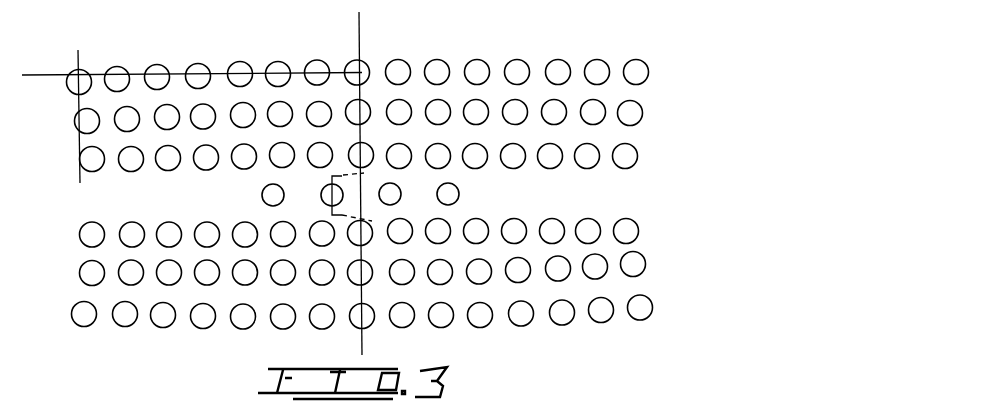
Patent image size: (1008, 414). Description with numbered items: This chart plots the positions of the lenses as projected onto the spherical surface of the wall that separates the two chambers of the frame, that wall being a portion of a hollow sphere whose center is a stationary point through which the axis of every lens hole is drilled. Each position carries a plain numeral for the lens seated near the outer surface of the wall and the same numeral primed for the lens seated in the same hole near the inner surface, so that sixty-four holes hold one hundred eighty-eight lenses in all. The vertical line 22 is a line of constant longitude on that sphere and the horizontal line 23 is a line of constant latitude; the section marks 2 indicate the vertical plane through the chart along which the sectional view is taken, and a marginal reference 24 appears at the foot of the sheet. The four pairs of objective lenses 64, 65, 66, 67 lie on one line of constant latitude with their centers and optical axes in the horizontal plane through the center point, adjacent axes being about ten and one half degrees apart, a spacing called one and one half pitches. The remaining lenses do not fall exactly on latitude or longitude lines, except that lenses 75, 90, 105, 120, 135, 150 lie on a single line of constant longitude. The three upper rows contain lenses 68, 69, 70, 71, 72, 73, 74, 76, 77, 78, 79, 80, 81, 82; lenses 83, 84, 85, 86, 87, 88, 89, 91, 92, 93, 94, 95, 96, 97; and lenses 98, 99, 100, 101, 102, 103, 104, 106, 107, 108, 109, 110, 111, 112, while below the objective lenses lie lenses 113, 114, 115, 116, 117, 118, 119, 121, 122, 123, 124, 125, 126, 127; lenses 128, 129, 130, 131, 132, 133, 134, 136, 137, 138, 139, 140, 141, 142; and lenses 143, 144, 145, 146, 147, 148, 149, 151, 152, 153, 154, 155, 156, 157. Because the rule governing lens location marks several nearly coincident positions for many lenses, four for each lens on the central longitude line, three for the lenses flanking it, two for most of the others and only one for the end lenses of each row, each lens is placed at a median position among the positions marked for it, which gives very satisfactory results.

The section line 2- 2 is at (356, 355).
The line of constant longitude 22 is at (72, 55).
The line of constant latitude 23 is at (30, 76).
The base 24 is at (244, 409).
The objective lens 64 is at (267, 186).
The objective lens 65 is at (338, 187).
The objective lens 66 is at (396, 185).
The objective lens 67 is at (454, 185).
The lens 68 is at (73, 72).
The lens 69 is at (115, 68).
The lens 70 is at (151, 67).
The lens 71 is at (192, 66).
The lens 72 is at (234, 64).
The lens 73 is at (272, 64).
The lens 74 is at (311, 63).
The lens 75 is at (351, 63).
The lens 76 is at (392, 62).
The lens 77 is at (431, 62).
The lens 78 is at (471, 62).
The lens 79 is at (511, 62).
The lens 80 is at (552, 62).
The lens 81 is at (591, 62).
The lens 82 is at (634, 61).
The lens 83 is at (81, 111).
The lens 84 is at (121, 109).
The lens 85 is at (161, 107).
The lens 86 is at (197, 107).
The lens 87 is at (237, 105).
The lens 88 is at (274, 104).
The lens 89 is at (313, 104).
The lens 90 is at (352, 102).
The lens 91 is at (393, 102).
The lens 92 is at (432, 102).
The lens 93 is at (474, 101).
The lens 94 is at (513, 101).
The lens 95 is at (558, 101).
The lens 96 is at (591, 101).
The lens 97 is at (634, 102).
The lens 98 is at (86, 149).
The lens 99 is at (125, 149).
The lens 100 is at (162, 148).
The lens 101 is at (200, 148).
The lens 102 is at (242, 146).
The lens 103 is at (286, 144).
The lens 104 is at (318, 144).
The lens 105 is at (355, 145).
The lens 106 is at (397, 145).
The lens 107 is at (436, 145).
The lens 108 is at (473, 145).
The lens 109 is at (517, 145).
The lens 110 is at (554, 145).
The lens 111 is at (591, 145).
The lens 112 is at (630, 146).
The lens 113 is at (86, 225).
The lens 114 is at (126, 225).
The lens 115 is at (163, 225).
The lens 116 is at (205, 224).
The lens 117 is at (243, 224).
The lens 118 is at (281, 223).
The lens 119 is at (333, 222).
The lens 120 is at (384, 228).
The lens 121 is at (404, 220).
The lens 122 is at (442, 220).
The lens 123 is at (480, 220).
The lens 124 is at (518, 220).
The lens 125 is at (558, 221).
The lens 126 is at (594, 221).
The lens 127 is at (632, 221).
The lens 128 is at (86, 263).
The lens 129 is at (125, 263).
The lens 130 is at (163, 263).
The lens 131 is at (201, 263).
The lens 132 is at (239, 263).
The lens 133 is at (277, 263).
The lens 134 is at (316, 263).
The lens 135 is at (354, 263).
The lens 136 is at (396, 262).
The lens 137 is at (438, 261).
The lens 138 is at (473, 262).
The lens 139 is at (516, 259).
The lens 140 is at (556, 258).
The lens 141 is at (593, 256).
The lens 142 is at (637, 253).
The lens 143 is at (78, 304).
The lens 144 is at (123, 303).
The lens 145 is at (167, 304).
The lens 146 is at (207, 305).
The lens 147 is at (247, 306).
The lens 148 is at (287, 306).
The lens 149 is at (327, 306).
The lens 150 is at (367, 305).
The lens 151 is at (406, 304).
The lens 152 is at (445, 304).
The lens 153 is at (484, 304).
The lens 154 is at (525, 303).
The lens 155 is at (566, 302).
The lens 156 is at (605, 299).
The lens 157 is at (647, 297).